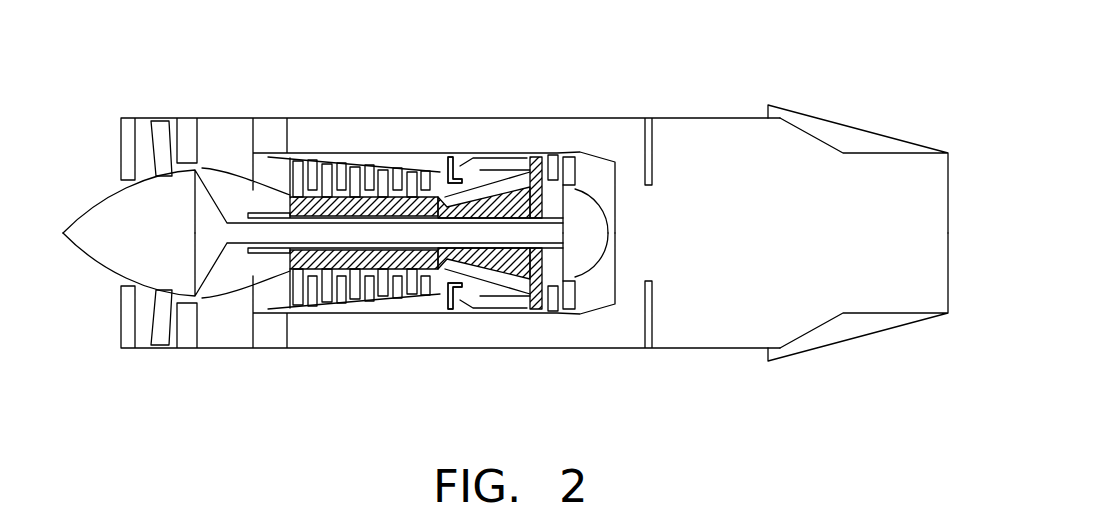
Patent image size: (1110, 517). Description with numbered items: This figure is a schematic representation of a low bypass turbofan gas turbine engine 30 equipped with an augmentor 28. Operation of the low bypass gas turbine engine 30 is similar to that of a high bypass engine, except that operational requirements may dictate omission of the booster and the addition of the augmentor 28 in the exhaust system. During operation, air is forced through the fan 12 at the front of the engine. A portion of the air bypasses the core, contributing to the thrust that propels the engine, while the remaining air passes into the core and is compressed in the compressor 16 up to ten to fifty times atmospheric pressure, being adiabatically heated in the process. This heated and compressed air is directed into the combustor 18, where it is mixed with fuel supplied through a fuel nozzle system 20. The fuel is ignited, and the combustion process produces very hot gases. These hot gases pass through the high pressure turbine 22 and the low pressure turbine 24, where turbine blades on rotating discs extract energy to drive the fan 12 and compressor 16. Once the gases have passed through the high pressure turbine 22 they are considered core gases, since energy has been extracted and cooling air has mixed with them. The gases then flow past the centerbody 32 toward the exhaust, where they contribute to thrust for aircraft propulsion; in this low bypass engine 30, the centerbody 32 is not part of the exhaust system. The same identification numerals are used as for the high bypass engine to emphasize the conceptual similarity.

The fan 12 is at (163, 120).
The compressor 16 is at (366, 152).
The combustor 18 is at (494, 151).
The fuel nozzle system 20 is at (453, 155).
The high pressure turbine 22 is at (537, 157).
The low pressure turbine 24 is at (571, 157).
The augmentor 28 is at (778, 105).
The low bypass gas turbine engine 30 is at (425, 373).
The centerbody 32 is at (594, 270).